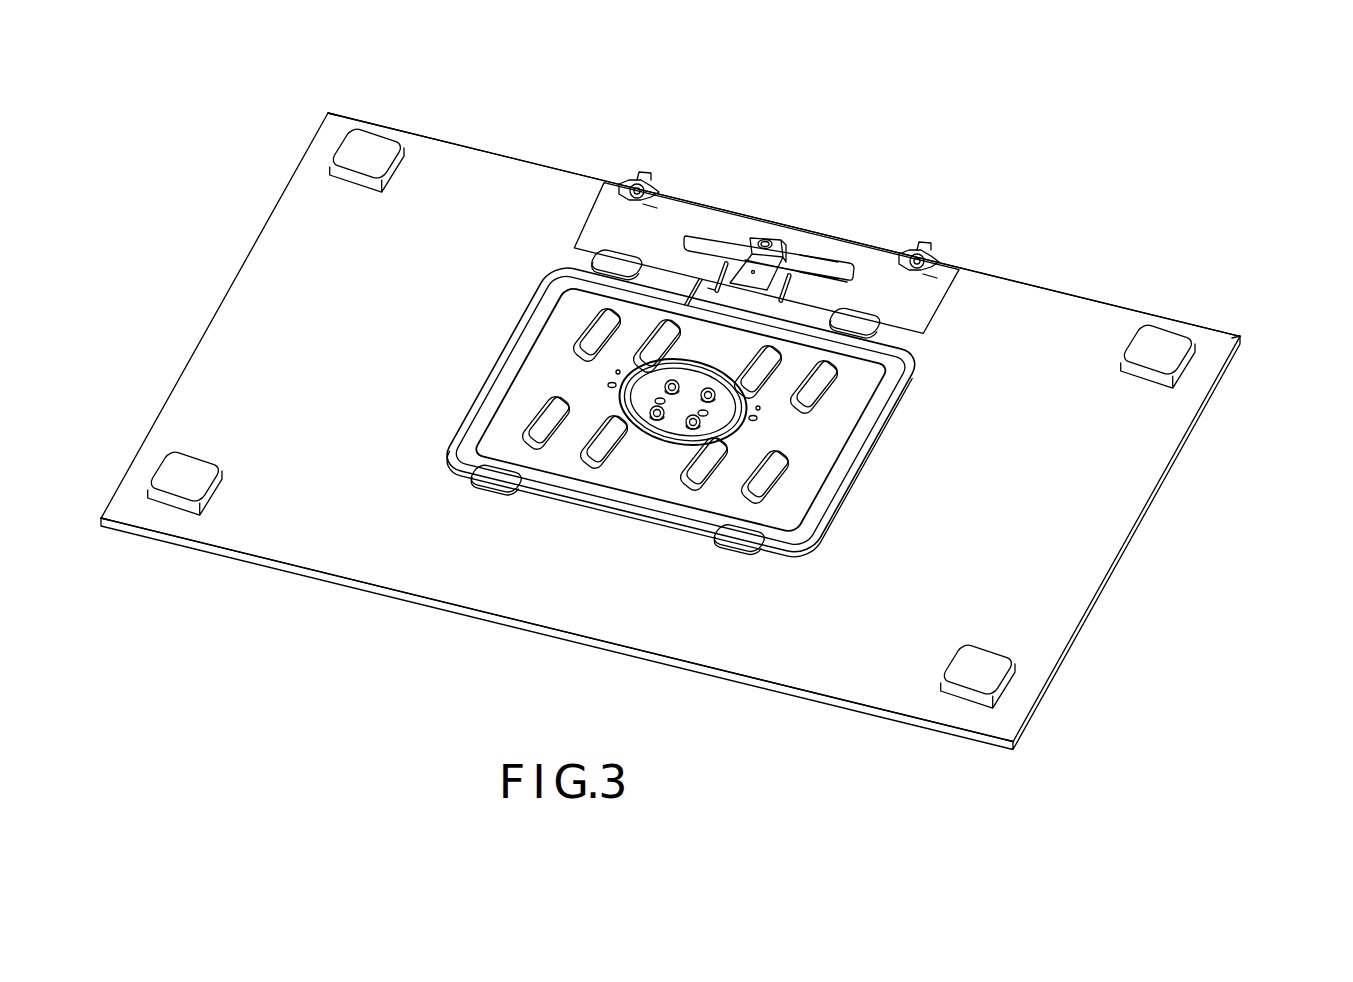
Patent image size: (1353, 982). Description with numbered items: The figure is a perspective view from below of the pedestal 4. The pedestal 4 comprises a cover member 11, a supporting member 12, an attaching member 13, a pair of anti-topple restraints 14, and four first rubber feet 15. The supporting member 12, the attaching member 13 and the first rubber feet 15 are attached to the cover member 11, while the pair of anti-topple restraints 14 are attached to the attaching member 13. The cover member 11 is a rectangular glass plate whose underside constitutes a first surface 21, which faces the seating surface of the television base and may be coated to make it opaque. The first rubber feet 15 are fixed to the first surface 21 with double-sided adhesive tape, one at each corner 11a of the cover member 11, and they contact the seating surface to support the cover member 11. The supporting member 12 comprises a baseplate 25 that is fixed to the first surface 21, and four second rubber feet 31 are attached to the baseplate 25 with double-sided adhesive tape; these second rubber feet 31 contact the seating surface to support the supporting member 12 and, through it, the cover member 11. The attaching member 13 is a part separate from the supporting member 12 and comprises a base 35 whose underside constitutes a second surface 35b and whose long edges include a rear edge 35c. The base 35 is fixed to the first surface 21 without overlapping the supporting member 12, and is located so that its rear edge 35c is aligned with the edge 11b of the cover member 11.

The pedestal 4 is at (238, 152).
The cover member 11 is at (1160, 452).
The corner 11a is at (328, 112).
The edge 11b is at (1066, 292).
The supporting member 12 is at (872, 448).
The attaching member 13 is at (812, 230).
The anti-topple restraints 14 is at (647, 177).
The first rubber feet 15 is at (371, 146).
The first surface 21 is at (1110, 513).
The baseplate 25 is at (540, 375).
The second rubber feet 31 is at (612, 262).
The base 35 is at (696, 216).
The second surface 35b is at (754, 232).
The rear edge 35c is at (869, 243).